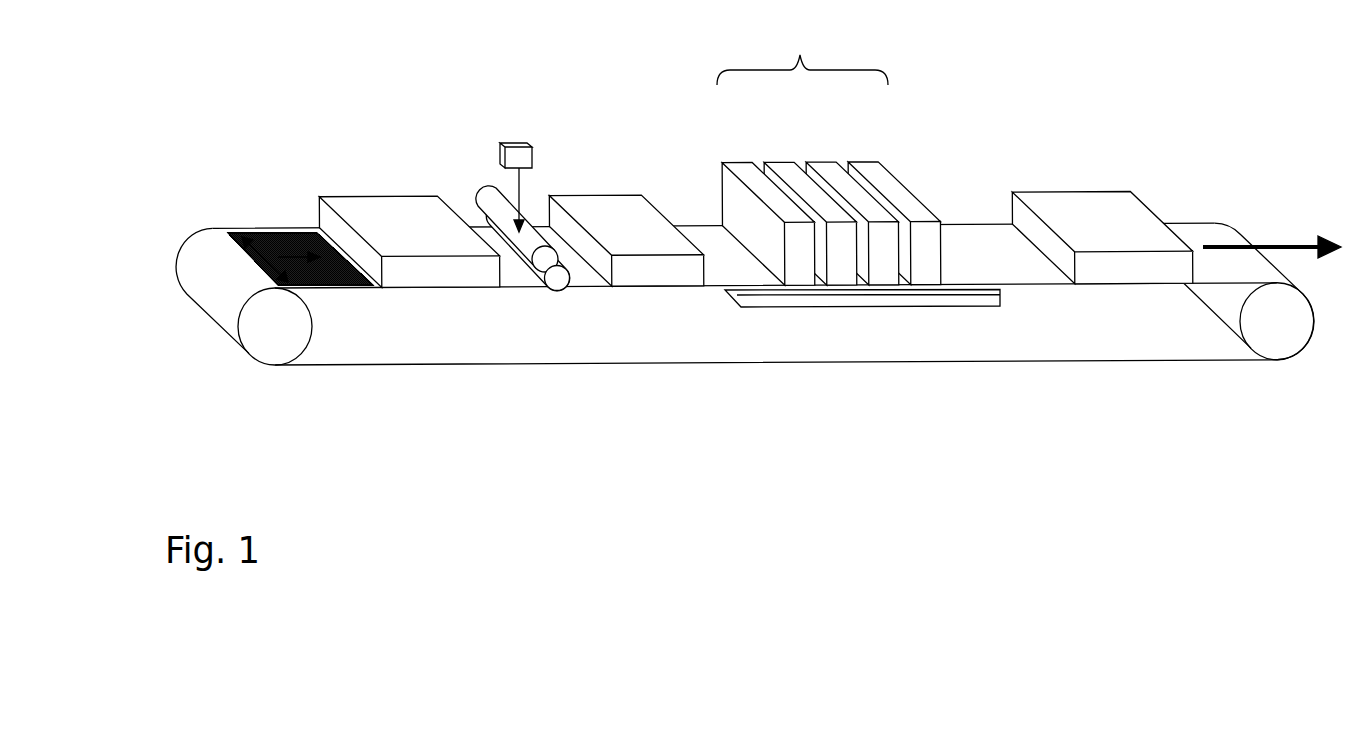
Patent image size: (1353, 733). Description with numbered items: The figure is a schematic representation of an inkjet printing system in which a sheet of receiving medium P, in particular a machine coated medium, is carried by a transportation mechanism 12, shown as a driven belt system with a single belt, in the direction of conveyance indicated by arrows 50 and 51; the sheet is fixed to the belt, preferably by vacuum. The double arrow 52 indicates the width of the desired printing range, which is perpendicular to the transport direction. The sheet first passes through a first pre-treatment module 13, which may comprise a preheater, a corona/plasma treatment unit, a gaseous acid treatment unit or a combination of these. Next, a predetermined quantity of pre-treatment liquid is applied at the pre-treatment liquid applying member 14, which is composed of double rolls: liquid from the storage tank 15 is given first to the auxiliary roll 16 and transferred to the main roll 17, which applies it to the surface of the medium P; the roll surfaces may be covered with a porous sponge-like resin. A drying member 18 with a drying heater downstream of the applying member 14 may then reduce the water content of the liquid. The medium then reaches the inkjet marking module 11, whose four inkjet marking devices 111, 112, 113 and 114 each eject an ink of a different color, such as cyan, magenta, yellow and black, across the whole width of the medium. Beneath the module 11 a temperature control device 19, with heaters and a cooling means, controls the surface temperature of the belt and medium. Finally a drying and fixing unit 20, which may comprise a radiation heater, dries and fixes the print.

The inkjet marking module 11 is at (829, 146).
The inkjet marking device 111 is at (867, 166).
The inkjet marking device 112 is at (826, 166).
The inkjet marking device 113 is at (786, 167).
The inkjet marking device 114 is at (743, 166).
The transportation mechanism 12 is at (739, 298).
The first pre-treatment module 13 is at (387, 205).
The pre-treatment liquid applying member 14 is at (513, 133).
The storage tank 15 is at (515, 138).
The auxiliary roll 16 is at (482, 202).
The main roll 17 is at (562, 288).
The drying member 18 is at (616, 202).
The temperature control device 19 is at (880, 303).
The drying and fixing unit 20 is at (1081, 200).
The arrow 50 is at (300, 216).
The arrow 51 is at (1242, 237).
The double arrow 52 is at (232, 283).
The receiving medium P is at (240, 282).